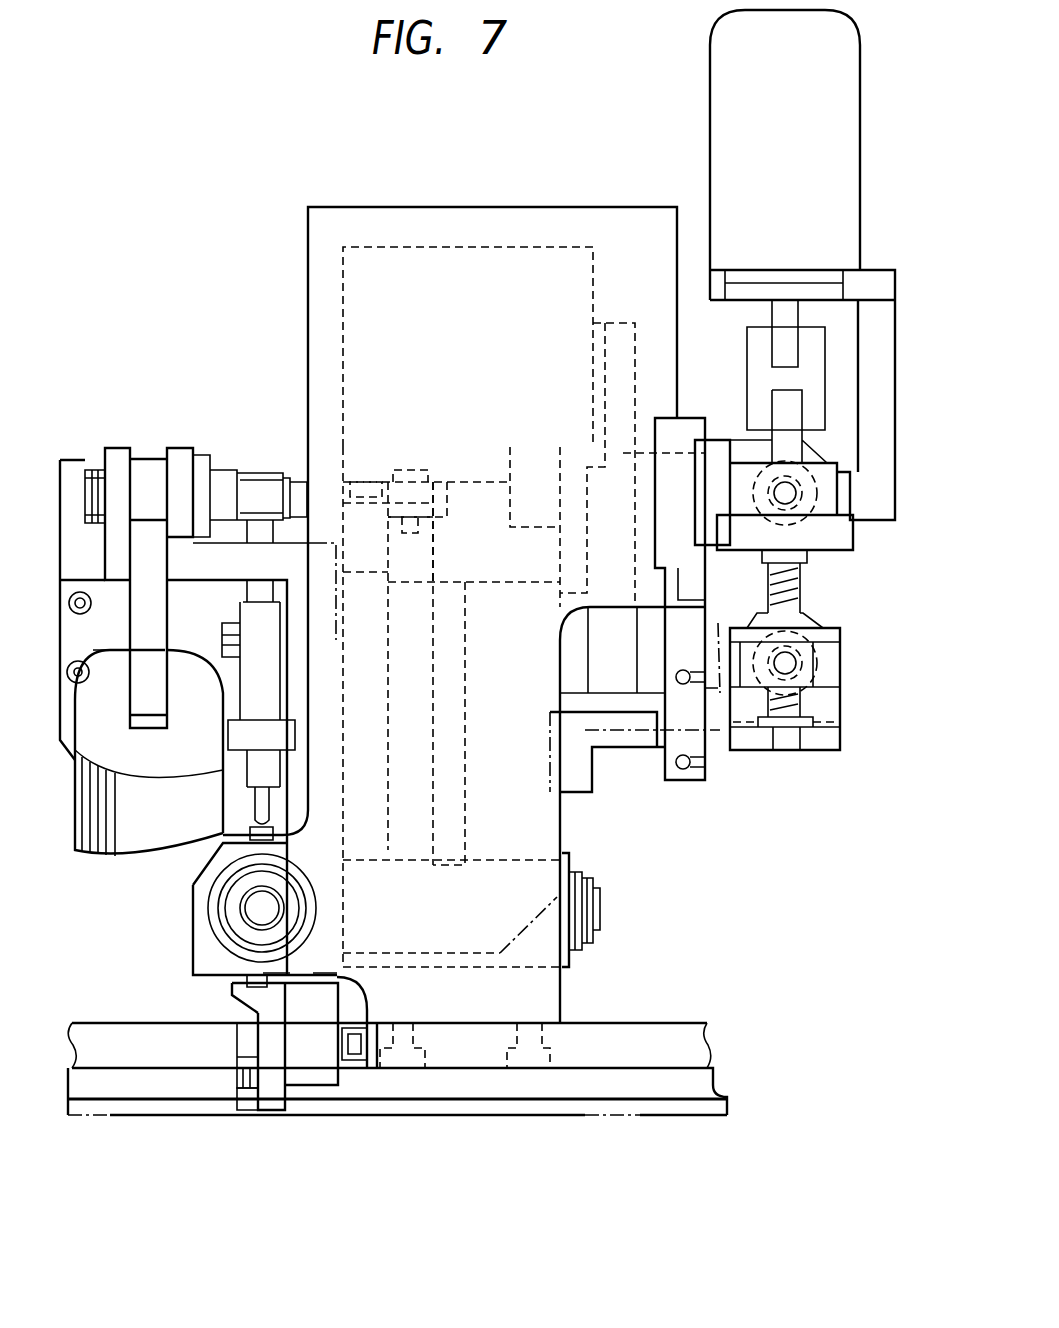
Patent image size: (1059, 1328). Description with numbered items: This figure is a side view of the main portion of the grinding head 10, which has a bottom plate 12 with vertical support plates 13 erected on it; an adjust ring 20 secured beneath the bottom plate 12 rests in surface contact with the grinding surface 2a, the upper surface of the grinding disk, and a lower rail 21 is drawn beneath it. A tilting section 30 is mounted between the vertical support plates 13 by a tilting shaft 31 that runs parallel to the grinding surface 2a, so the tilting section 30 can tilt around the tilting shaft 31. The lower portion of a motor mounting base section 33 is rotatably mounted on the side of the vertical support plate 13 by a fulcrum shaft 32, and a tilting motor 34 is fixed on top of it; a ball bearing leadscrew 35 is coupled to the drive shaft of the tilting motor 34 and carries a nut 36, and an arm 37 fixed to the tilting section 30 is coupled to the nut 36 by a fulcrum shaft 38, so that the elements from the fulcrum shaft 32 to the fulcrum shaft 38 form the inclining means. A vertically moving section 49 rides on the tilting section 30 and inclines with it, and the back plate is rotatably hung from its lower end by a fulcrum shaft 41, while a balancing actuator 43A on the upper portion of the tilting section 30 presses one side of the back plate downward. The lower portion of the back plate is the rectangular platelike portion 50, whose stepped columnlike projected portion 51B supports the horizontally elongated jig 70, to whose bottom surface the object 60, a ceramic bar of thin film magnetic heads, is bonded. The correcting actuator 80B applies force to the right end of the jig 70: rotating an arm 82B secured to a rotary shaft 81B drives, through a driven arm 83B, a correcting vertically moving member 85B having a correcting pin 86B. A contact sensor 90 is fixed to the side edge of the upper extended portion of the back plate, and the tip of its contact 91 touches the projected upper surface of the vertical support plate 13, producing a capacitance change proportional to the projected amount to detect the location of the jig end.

The grinding head 10 is at (300, 249).
The vertical support plate 13 is at (427, 207).
The balancing actuator 43A is at (383, 247).
The vertically moving section 49 is at (358, 480).
The tilting section 30 is at (482, 478).
The tilting motor 34 is at (710, 90).
The motor mounting base section 33 is at (865, 290).
The fulcrum shaft 32 is at (773, 485).
The ball bearing leadscrew 35 is at (800, 588).
The fulcrum shaft 38 is at (800, 657).
The nut 36 is at (838, 676).
The arm 37 is at (642, 743).
The fulcrum shaft 41 is at (603, 910).
The arm 82B is at (160, 567).
The driven arm 83B is at (213, 478).
The rotary shaft 81B is at (78, 478).
The contact sensor 90 is at (255, 610).
The correcting actuator 80B is at (100, 830).
The contact 91 is at (257, 807).
The tilting shaft 31 is at (242, 908).
The adjust ring 20 is at (422, 1075).
The bottom plate 12 is at (650, 1024).
The base rail 21 is at (668, 1087).
The grinding surface 2a is at (650, 1110).
The rectangular platelike portion 50 is at (330, 1120).
The object 60 is at (257, 1123).
The horizontally elongated jig 70 is at (225, 1117).
The correcting pin 86B is at (238, 1073).
The stepped columnlike projected portion 51B is at (245, 1045).
The correcting vertically moving member 85B is at (280, 1100).